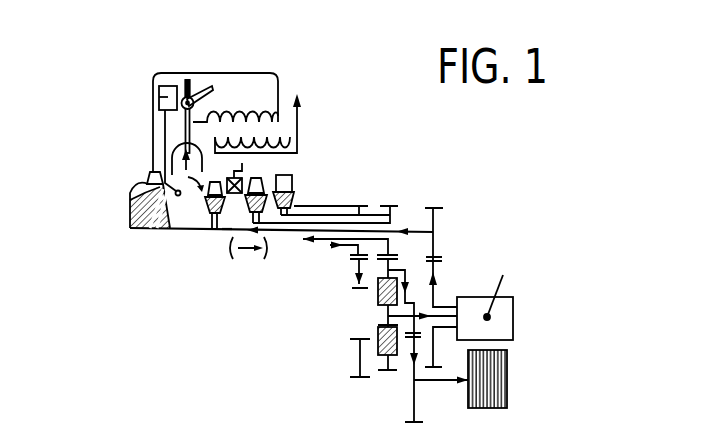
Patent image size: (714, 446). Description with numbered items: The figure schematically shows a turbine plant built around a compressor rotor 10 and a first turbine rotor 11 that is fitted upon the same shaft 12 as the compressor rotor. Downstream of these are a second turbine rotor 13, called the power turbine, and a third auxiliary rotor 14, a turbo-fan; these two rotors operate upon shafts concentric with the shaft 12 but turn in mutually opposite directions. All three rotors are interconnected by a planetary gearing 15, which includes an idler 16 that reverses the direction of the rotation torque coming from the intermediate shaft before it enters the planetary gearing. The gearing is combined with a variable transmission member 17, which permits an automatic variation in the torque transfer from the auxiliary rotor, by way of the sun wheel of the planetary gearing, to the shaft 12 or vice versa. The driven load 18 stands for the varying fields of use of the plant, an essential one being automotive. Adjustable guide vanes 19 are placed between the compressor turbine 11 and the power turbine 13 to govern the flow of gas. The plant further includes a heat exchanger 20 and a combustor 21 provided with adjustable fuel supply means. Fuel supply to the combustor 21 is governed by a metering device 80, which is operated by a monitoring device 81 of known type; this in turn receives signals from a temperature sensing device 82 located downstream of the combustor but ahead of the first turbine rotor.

The compressor rotor 10 is at (137, 230).
The first turbine rotor 11 is at (217, 213).
The shaft 12 is at (228, 229).
The second turbine rotor 13 is at (258, 210).
The third auxiliary rotor 14 is at (294, 206).
The planetary gearing 15 is at (367, 350).
The idler 16 is at (398, 258).
The variable transmission member 17 is at (503, 310).
The driven load 18 is at (493, 382).
The adjustable guide vanes 19 is at (237, 177).
The heat exchanger 20 is at (268, 132).
The combustor 21 is at (172, 162).
The metering device 80 is at (189, 101).
The monitoring device 81 is at (159, 97).
The temperature sensing device 82 is at (150, 178).